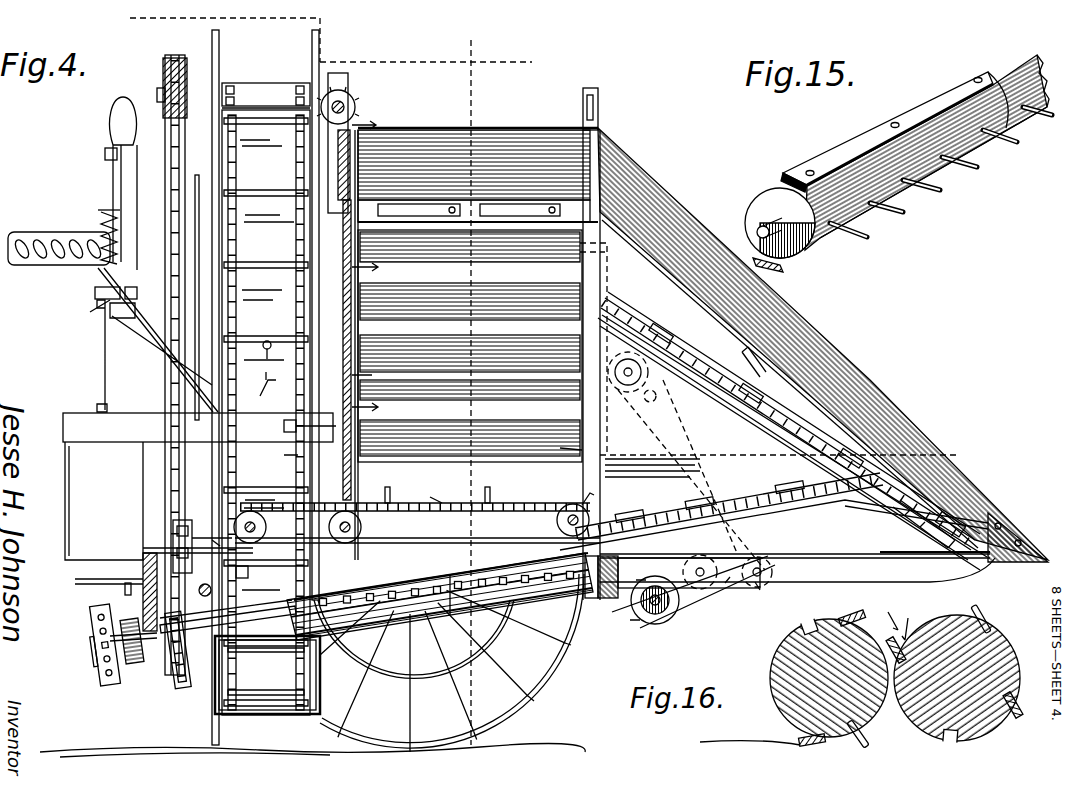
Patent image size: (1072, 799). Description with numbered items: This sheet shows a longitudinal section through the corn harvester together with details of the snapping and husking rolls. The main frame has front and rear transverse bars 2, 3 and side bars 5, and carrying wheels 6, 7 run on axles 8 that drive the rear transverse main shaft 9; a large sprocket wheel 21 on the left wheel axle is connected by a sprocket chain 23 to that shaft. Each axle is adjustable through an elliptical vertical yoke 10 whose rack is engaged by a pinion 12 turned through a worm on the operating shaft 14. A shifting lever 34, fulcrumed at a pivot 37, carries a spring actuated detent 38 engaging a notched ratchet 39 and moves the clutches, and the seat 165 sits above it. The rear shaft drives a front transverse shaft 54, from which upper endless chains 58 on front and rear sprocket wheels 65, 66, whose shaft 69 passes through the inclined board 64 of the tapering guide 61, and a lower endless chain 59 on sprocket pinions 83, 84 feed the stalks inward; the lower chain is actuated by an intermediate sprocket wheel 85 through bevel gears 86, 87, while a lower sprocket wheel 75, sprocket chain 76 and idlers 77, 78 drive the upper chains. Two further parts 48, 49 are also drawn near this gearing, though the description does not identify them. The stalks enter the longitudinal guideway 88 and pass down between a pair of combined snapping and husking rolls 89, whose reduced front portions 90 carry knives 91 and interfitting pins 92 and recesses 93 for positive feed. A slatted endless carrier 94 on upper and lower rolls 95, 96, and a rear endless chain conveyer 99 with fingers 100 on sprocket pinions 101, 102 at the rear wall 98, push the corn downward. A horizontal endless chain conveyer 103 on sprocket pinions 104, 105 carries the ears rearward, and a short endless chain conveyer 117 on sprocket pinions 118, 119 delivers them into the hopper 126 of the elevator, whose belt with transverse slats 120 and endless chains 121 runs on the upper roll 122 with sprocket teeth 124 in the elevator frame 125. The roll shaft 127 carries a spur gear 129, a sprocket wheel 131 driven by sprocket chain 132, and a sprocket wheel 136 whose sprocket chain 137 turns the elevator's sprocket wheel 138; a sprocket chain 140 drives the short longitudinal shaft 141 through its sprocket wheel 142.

In FIG. 4, the front transverse bar 2 is at (606, 594).
In FIG. 4, the rear transverse bar 3 is at (140, 578).
In FIG. 4, the side bar 5 is at (131, 20).
In FIG. 4, the carrying wheel 6 is at (471, 391).
In FIG. 4, the carrying wheel 7 is at (519, 733).
In FIG. 4, the axle 8 is at (265, 541).
In FIG. 4, the rear transverse main shaft 9 is at (205, 584).
In FIG. 4, the vertical yoke 10 is at (618, 362).
In FIG. 4, the pinion 12 is at (655, 404).
In FIG. 4, the operating shaft 14 is at (668, 398).
In FIG. 4, the sprocket wheel 21 is at (424, 678).
In FIG. 4, the sprocket chain 23 is at (393, 682).
In FIG. 4, the shifting lever 34 is at (150, 134).
In FIG. 4, the pivot 37 is at (125, 591).
In FIG. 4, the spring actuated detent 38 is at (95, 293).
In FIG. 4, the ratchet 39 is at (100, 310).
In FIG. 4, the gear 48 is at (691, 563).
In FIG. 4, the gear support 49 is at (754, 588).
In FIG. 4, the front transverse shaft 54 is at (629, 627).
In FIG. 4, the upper endless chain 58 is at (766, 370).
In FIG. 4, the lower endless chain 59 is at (767, 496).
In FIG. 4, the tapering guide 61 is at (1016, 558).
In FIG. 4, the inclined board 64 is at (738, 388).
In FIG. 4, the front sprocket wheel 65 is at (914, 522).
In FIG. 4, the rear sprocket wheel 66 is at (690, 348).
In FIG. 4, the shaft 69 is at (673, 322).
In FIG. 4, the lower sprocket wheel 75 is at (648, 626).
In FIG. 4, the sprocket chain 76 is at (680, 458).
In FIG. 4, the idler 77 is at (762, 562).
In FIG. 4, the idler 78 is at (738, 561).
In FIG. 4, the front sprocket pinion 83 is at (802, 490).
In FIG. 4, the rear sprocket pinion 84 is at (478, 512).
In FIG. 4, the intermediate sprocket wheel 85 is at (660, 514).
In FIG. 4, the bevel gear 86 is at (637, 612).
In FIG. 4, the bevel gear 87 is at (660, 624).
In FIG. 4, the longitudinal guideway 88 is at (600, 140).
In FIG. 4, the combined snapping and husking roll 89 is at (418, 626).
In FIG. 15, the combined snapping and husking roll 89 is at (1005, 62).
In FIG. 4, the reduced front portion 90 is at (538, 594).
In FIG. 15, the reduced front portion 90 is at (893, 190).
In FIG. 16, the reduced front portion 90 is at (800, 668).
In FIG. 4, the knife 91 is at (504, 623).
In FIG. 15, the knife 91 is at (857, 143).
In FIG. 16, the knife 91 is at (852, 618).
In FIG. 15, the pin 92 is at (935, 170).
In FIG. 16, the pin 92 is at (860, 748).
In FIG. 4, the recess 93 is at (405, 590).
In FIG. 16, the recess 93 is at (803, 636).
In FIG. 4, the endless carrier 94 is at (213, 172).
In FIG. 4, the upper roll 95 is at (586, 250).
In FIG. 4, the lower roll 96 is at (585, 436).
In FIG. 4, the rear wall 98 is at (355, 322).
In FIG. 4, the endless chain conveyer 99 is at (374, 241).
In FIG. 4, the finger 100 is at (383, 338).
In FIG. 4, the upper sprocket pinion 101 is at (350, 102).
In FIG. 4, the lower sprocket pinion 102 is at (362, 522).
In FIG. 4, the horizontal endless chain conveyer 103 is at (441, 489).
In FIG. 4, the front sprocket pinion 104 is at (564, 504).
In FIG. 4, the rear sprocket pinion 105 is at (232, 530).
In FIG. 4, the short endless chain conveyer 117 is at (292, 454).
In FIG. 4, the upper sprocket pinion 118 is at (286, 377).
In FIG. 4, the lower sprocket pinion 119 is at (266, 527).
In FIG. 4, the transverse slat 120 is at (265, 198).
In FIG. 4, the endless chain 121 is at (272, 642).
In FIG. 4, the upper roll 122 is at (262, 84).
In FIG. 4, the sprocket teeth 124 is at (228, 82).
In FIG. 4, the elevator frame 125 is at (214, 283).
In FIG. 4, the hopper 126 is at (214, 714).
In FIG. 4, the shaft 127 is at (282, 610).
In FIG. 4, the spur gear 129 is at (136, 666).
In FIG. 4, the sprocket wheel 131 is at (96, 658).
In FIG. 4, the sprocket chain 132 is at (92, 602).
In FIG. 4, the sprocket wheel 136 is at (173, 658).
In FIG. 4, the sprocket chain 137 is at (178, 482).
In FIG. 4, the sprocket wheel 138 is at (168, 60).
In FIG. 4, the sprocket chain 140 is at (218, 536).
In FIG. 4, the short longitudinal shaft 141 is at (250, 574).
In FIG. 4, the sprocket wheel 142 is at (172, 540).
In FIG. 4, the seat 165 is at (50, 238).